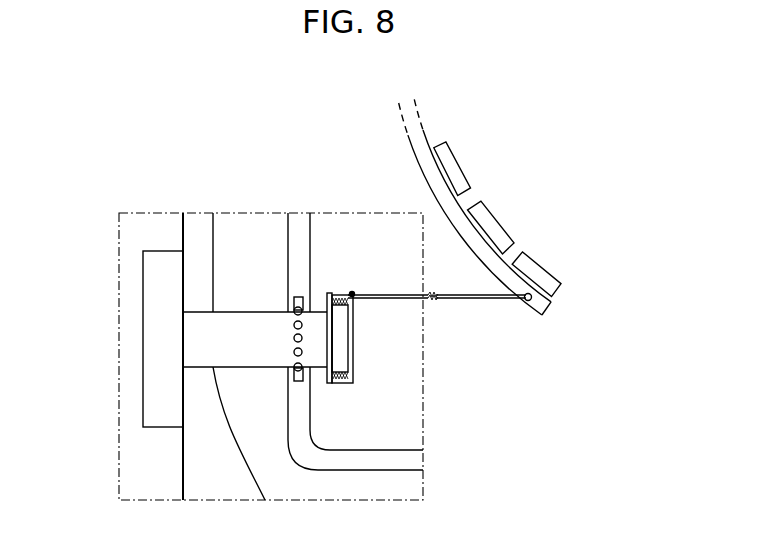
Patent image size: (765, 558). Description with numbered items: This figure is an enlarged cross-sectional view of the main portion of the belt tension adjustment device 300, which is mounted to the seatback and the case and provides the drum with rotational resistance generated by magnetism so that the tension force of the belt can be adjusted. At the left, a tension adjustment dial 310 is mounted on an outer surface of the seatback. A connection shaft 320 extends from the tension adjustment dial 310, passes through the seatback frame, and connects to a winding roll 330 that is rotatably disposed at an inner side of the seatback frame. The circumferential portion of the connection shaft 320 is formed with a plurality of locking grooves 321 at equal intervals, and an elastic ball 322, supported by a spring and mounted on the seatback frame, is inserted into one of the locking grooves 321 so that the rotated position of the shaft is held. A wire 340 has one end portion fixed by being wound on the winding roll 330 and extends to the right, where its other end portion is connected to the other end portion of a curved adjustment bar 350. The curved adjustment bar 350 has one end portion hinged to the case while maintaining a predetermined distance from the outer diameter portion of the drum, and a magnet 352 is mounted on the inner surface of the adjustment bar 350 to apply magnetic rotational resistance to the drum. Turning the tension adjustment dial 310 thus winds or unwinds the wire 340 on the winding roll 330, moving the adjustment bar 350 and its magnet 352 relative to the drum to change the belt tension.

The belt tension adjustment device 300 is at (325, 258).
The tension adjustment dial 310 is at (158, 258).
The connection shaft 320 is at (208, 343).
The locking grooves 321 is at (294, 338).
The elastic ball 322 is at (292, 306).
The winding roll 330 is at (345, 352).
The wire 340 is at (400, 299).
The curved adjustment bar 350 is at (544, 317).
The magnet 352 is at (533, 272).